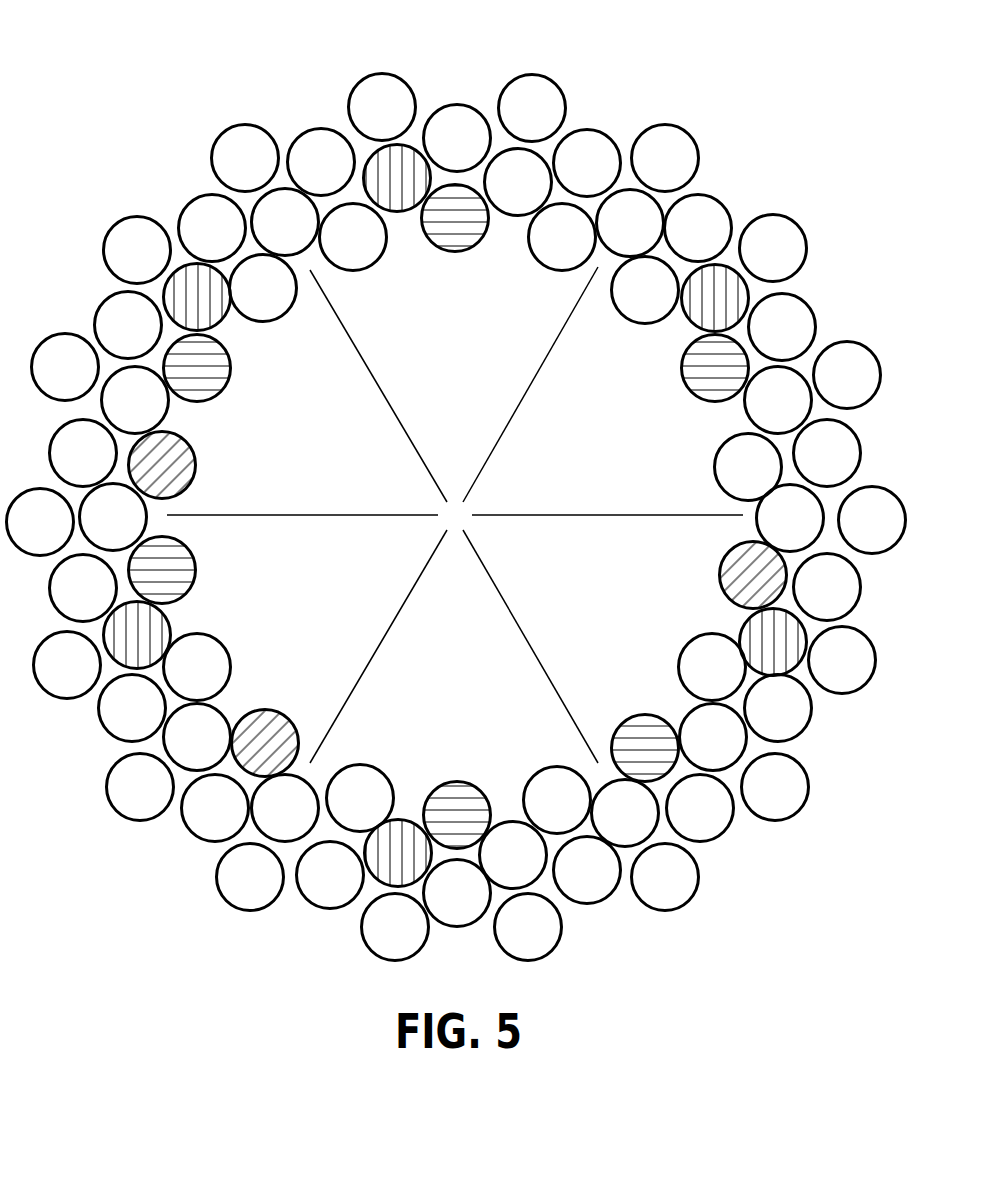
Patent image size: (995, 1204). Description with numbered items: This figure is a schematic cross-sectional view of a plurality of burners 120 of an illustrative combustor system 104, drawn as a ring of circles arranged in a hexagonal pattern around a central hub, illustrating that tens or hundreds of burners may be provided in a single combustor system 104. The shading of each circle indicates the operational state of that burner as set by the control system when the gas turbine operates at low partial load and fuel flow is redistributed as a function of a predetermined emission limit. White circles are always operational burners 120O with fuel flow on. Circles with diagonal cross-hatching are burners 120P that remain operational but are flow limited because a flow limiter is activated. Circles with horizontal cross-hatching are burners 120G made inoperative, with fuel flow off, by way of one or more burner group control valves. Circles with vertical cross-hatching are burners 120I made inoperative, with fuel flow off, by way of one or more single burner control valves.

The combustor system 104 is at (732, 852).
The burners 120 is at (815, 832).
The always operational burners 120O is at (463, 130).
The single-valve inoperative burners 120I is at (395, 188).
The group-valve inoperative burners 120G is at (455, 220).
The flow-limited operational burners 120P is at (167, 458).